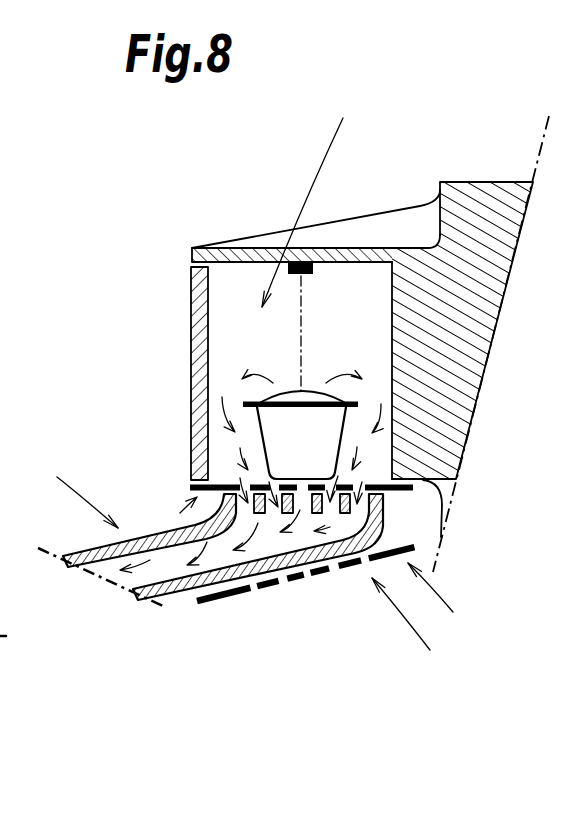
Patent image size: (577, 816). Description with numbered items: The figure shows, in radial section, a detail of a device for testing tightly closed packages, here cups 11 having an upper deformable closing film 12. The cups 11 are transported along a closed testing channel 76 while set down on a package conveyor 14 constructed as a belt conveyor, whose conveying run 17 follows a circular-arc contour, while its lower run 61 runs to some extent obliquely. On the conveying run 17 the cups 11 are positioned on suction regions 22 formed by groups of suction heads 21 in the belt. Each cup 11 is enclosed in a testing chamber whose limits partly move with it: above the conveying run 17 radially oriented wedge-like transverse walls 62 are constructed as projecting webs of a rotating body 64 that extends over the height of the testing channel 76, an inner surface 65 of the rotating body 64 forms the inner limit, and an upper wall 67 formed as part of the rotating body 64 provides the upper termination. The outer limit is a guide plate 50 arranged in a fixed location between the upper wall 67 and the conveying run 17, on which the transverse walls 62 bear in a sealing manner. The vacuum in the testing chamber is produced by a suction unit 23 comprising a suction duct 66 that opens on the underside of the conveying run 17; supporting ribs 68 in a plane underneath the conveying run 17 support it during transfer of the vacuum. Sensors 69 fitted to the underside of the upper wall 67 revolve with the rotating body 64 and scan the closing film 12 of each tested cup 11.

The cup 11 is at (275, 442).
The closing film 12 is at (298, 392).
The package conveyor 14 is at (447, 597).
The conveying run 17 is at (197, 497).
The suction heads 21 is at (282, 581).
The suction regions 22 is at (421, 629).
The suction unit 23 is at (393, 512).
The guide plate 50 is at (198, 312).
The lower run 61 is at (303, 595).
The transverse walls 62 is at (239, 276).
The rotating body 64 is at (490, 173).
The inner surface 65 is at (403, 390).
The suction duct 66 is at (82, 541).
The upper wall 67 is at (253, 259).
The supporting ribs 68 is at (347, 512).
The sensors 69 is at (300, 262).
The testing channel 76 is at (312, 199).